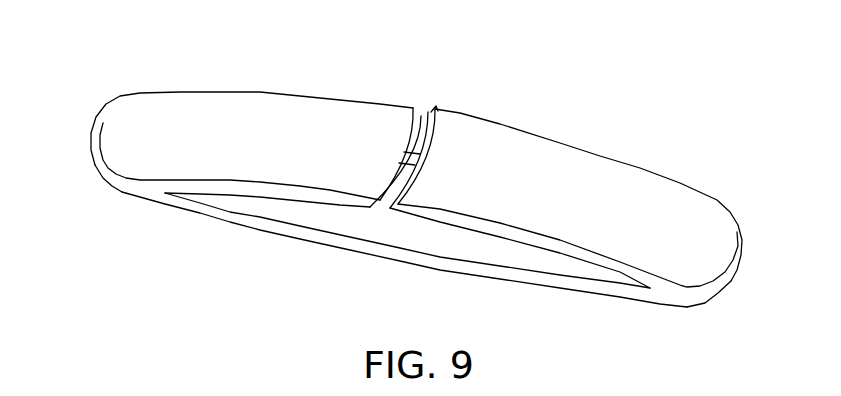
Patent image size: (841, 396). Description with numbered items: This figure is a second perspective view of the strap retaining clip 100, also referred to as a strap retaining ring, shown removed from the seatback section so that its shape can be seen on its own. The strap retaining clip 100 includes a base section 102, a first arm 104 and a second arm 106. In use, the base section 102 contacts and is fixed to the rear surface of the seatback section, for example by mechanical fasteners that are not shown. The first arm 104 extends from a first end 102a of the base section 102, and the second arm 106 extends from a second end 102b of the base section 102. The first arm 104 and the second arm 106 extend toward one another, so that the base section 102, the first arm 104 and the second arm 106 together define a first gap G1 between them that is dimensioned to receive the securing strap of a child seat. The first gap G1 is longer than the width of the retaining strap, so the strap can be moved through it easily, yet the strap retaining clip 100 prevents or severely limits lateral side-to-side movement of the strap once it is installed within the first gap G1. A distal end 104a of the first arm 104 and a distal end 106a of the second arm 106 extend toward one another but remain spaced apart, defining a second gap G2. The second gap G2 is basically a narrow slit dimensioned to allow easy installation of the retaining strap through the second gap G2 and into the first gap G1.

The strap retaining clip 100 is at (147, 44).
The base section 102 is at (283, 228).
The first end of the base section 102a is at (737, 282).
The second end of the base section 102b is at (88, 149).
The first arm 104 is at (587, 193).
The distal end of the first arm 104a is at (405, 183).
The second arm 106 is at (247, 132).
The distal end of the second arm 106a is at (404, 167).
The first gap G1 is at (453, 243).
The second gap G2 is at (429, 119).